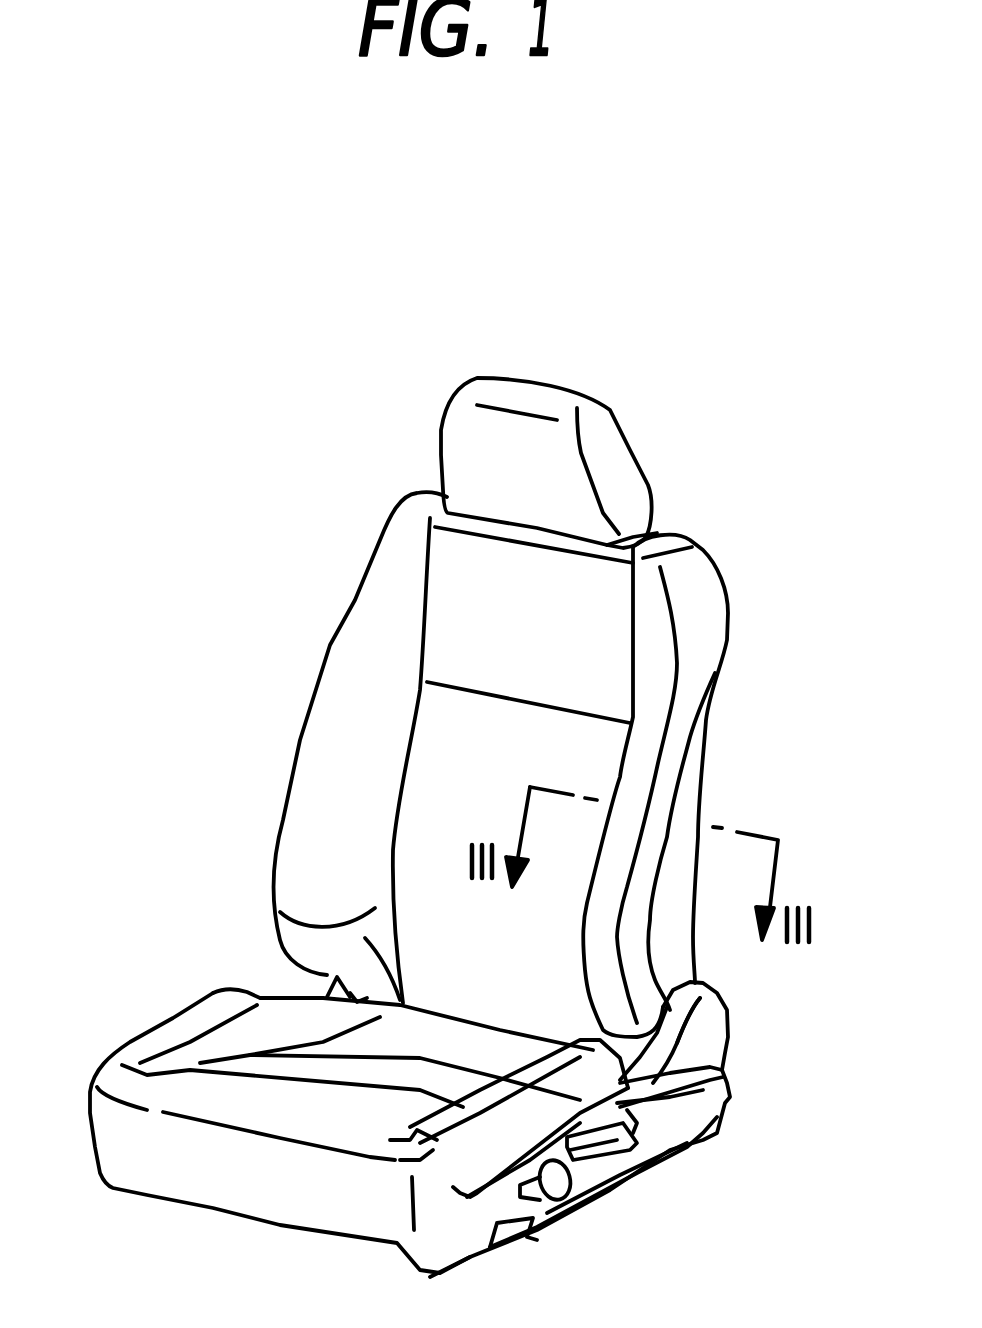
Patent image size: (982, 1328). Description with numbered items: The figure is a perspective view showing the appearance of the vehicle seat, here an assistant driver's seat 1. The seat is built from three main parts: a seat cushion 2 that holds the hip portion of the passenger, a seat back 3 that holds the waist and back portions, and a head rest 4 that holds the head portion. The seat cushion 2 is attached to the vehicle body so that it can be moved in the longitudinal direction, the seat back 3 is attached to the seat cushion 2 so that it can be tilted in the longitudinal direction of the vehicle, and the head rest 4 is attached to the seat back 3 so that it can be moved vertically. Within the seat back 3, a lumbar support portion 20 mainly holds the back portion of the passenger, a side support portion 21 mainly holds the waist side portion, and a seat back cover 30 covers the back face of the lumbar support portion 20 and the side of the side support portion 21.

The assistant driver's seat 1 is at (424, 340).
The seat cushion 2 is at (207, 1085).
The seat back 3 is at (327, 647).
The head rest 4 is at (613, 410).
The lumbar support portion 20 is at (440, 833).
The side support portion 21 is at (637, 913).
The seat back cover 30 is at (700, 738).